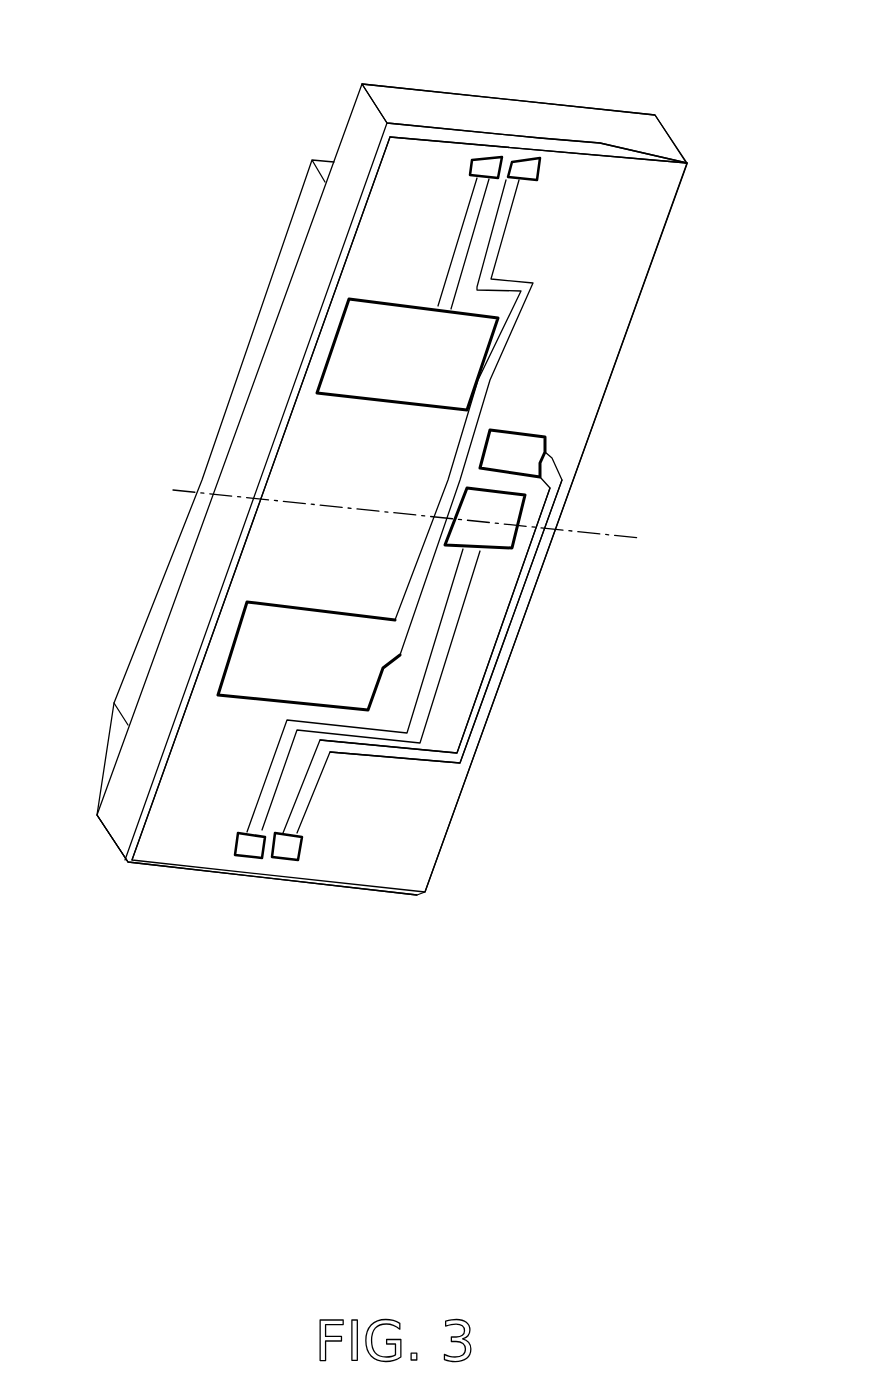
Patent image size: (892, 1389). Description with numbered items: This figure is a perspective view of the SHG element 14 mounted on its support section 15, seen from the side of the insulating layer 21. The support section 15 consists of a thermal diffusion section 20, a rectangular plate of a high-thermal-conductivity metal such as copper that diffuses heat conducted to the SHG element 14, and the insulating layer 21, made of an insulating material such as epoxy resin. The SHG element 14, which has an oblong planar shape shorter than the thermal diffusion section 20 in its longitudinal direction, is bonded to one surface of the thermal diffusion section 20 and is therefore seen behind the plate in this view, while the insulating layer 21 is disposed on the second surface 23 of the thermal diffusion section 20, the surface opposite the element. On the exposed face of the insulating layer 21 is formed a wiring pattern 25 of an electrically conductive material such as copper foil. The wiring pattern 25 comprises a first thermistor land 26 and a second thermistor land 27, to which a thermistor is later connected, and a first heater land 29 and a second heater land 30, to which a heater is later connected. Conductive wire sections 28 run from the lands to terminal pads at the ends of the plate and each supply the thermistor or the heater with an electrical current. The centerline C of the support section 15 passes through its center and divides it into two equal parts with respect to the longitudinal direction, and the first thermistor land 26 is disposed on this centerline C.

The SHG element 14 is at (310, 188).
The support section 15 is at (665, 105).
The thermal diffusion section 20 is at (110, 827).
The insulating layer 21 is at (128, 865).
The second surface 23 is at (445, 122).
The wiring pattern 25 is at (568, 353).
The first thermistor land 26 is at (495, 543).
The second thermistor land 27 is at (523, 430).
The conductive wire sections 28 is at (528, 287).
The first heater land 29 is at (250, 647).
The second heater land 30 is at (348, 347).
The centerline C is at (640, 533).